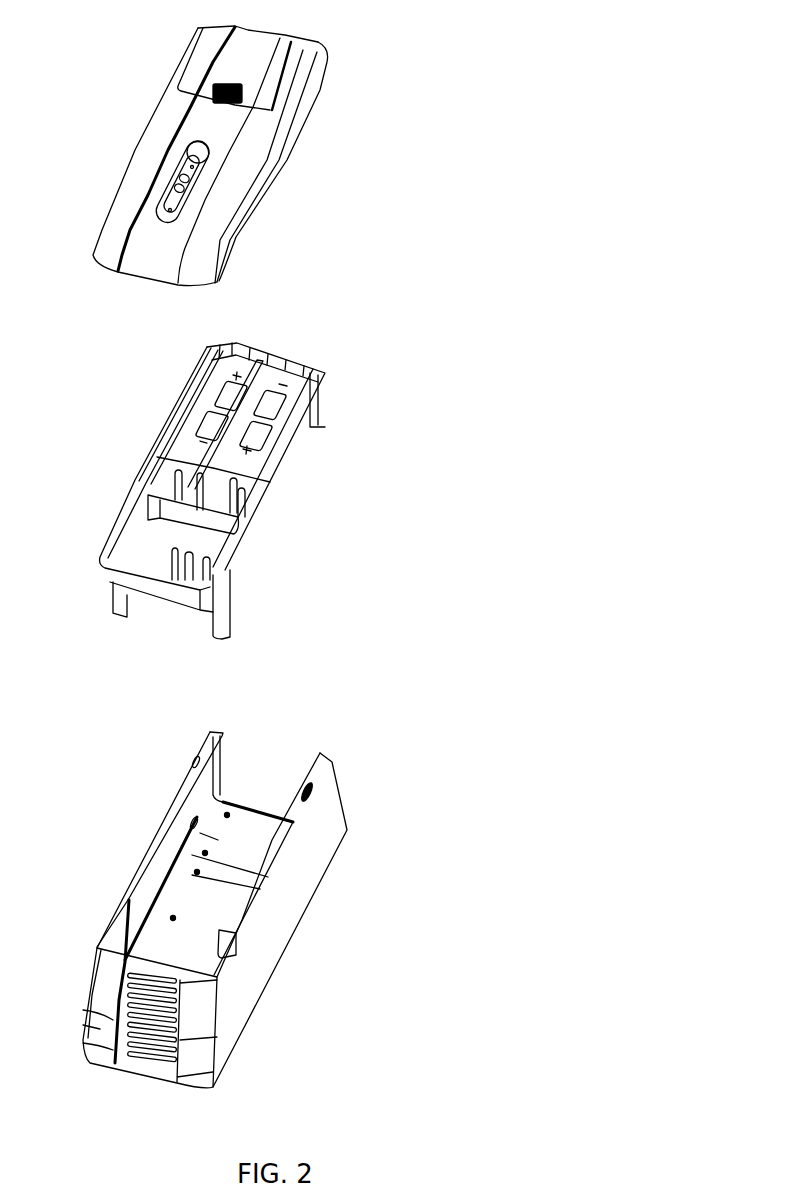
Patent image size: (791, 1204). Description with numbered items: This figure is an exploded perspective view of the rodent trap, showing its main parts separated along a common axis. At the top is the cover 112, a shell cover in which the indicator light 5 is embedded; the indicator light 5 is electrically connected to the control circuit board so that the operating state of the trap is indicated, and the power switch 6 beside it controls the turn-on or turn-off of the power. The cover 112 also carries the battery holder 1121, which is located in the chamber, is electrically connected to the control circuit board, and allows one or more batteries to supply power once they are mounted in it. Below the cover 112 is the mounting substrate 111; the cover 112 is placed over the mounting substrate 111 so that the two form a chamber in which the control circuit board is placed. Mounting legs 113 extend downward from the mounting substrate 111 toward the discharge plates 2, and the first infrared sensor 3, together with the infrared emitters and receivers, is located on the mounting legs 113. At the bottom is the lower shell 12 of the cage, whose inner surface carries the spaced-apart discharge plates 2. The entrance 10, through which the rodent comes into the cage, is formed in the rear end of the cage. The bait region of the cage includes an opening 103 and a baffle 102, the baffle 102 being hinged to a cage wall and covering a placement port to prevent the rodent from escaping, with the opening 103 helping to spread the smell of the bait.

The discharge plates 2 is at (185, 913).
The first infrared sensor 3 is at (131, 608).
The indicator light 5 is at (184, 148).
The power switch 6 is at (178, 174).
The entrance 10 is at (255, 782).
The lower shell 12 is at (275, 923).
The baffle 102 is at (120, 1062).
The opening 103 is at (145, 1050).
The mounting substrate 111 is at (265, 505).
The cover 112 is at (252, 192).
The mounting legs 113 is at (323, 414).
The battery holder 1121 is at (255, 58).